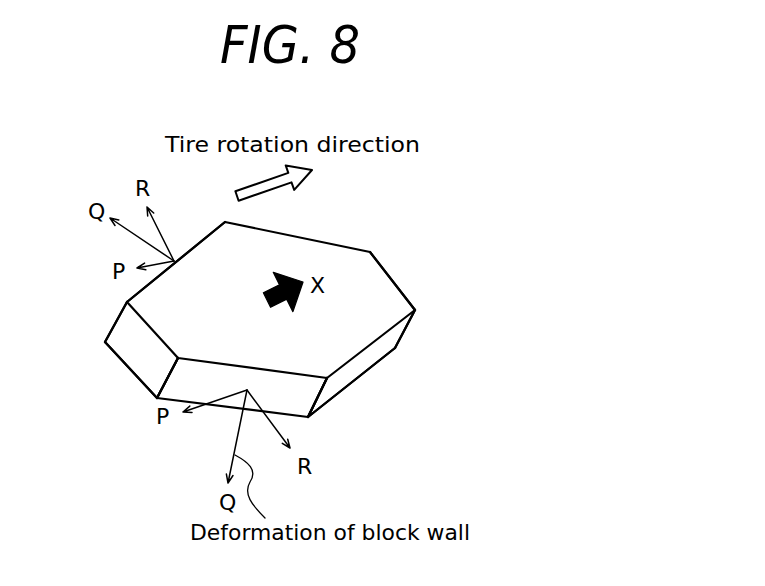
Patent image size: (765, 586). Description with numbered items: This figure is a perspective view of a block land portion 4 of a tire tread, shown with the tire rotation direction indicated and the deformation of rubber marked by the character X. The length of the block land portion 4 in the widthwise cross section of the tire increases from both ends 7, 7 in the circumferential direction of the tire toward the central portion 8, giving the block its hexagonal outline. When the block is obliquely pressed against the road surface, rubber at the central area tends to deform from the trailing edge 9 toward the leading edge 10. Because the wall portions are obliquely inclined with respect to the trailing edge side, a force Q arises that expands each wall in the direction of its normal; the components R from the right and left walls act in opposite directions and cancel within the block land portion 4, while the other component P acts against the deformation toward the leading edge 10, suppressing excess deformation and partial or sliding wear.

The block land portion 4 is at (402, 251).
The end of the block land portion in the circumferential direction of the tire 7 is at (370, 252).
The central portion of the block land portion 8 is at (225, 222).
The trailing edge 9 is at (130, 333).
The leading edge 10 is at (407, 288).